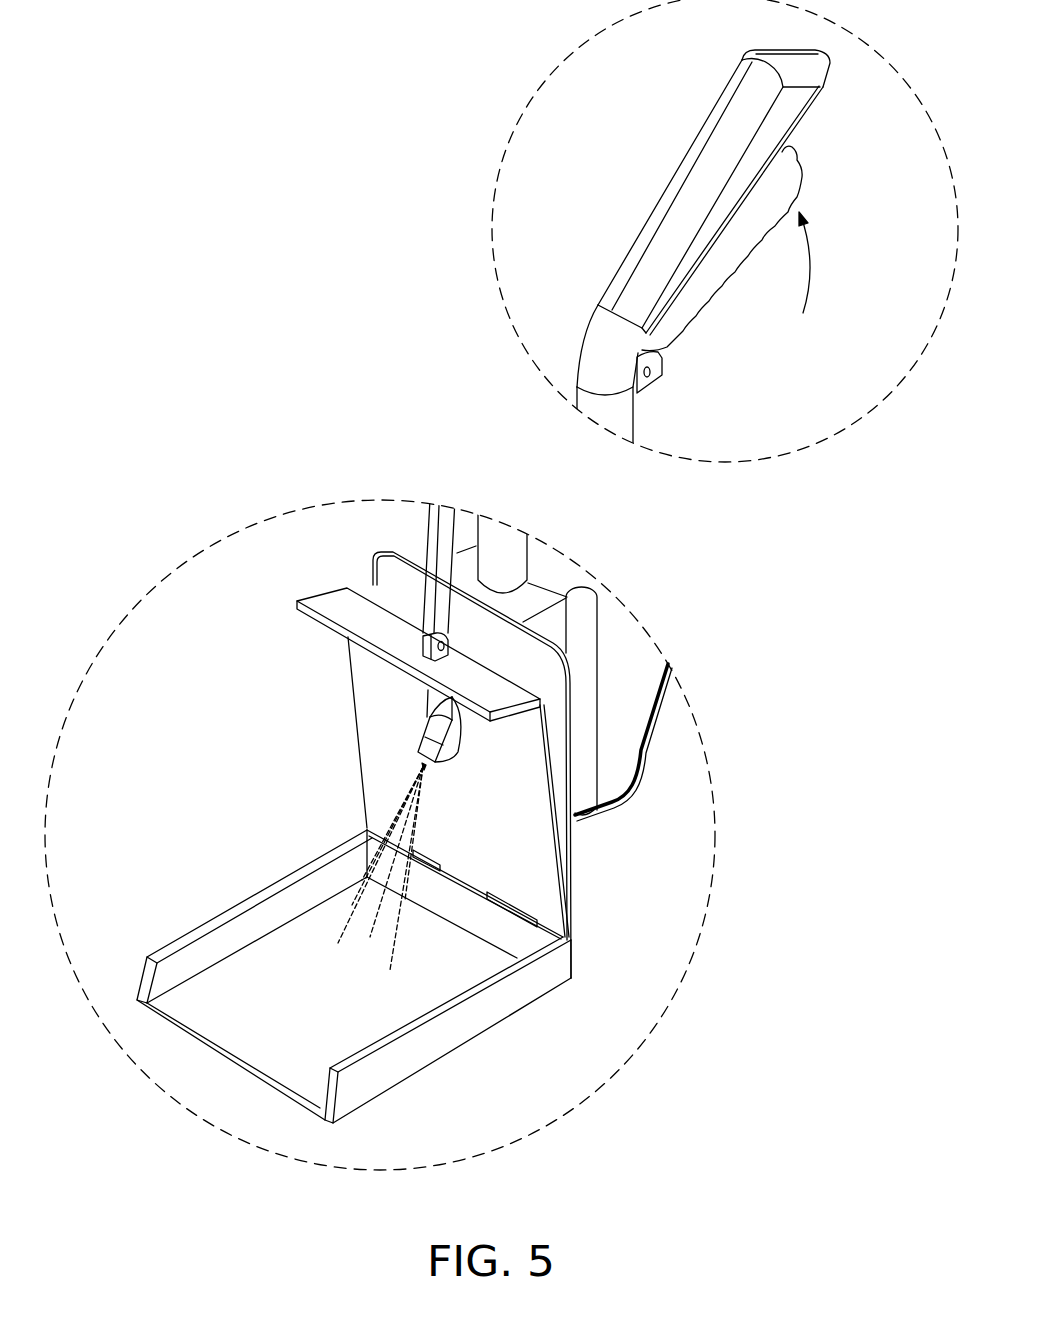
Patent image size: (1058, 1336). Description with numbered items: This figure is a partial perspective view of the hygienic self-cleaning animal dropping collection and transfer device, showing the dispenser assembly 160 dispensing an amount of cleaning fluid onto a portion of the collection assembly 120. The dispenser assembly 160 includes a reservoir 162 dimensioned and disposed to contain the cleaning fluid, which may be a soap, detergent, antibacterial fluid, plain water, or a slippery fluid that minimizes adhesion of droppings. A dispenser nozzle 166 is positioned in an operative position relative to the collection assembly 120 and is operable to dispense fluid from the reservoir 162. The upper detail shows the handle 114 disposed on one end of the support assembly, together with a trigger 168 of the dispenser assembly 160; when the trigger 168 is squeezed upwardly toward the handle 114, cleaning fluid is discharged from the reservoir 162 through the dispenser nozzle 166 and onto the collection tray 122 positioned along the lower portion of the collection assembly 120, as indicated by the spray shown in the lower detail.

The handle 114 is at (690, 147).
The trigger 168 is at (797, 163).
The dispenser nozzle 166 is at (430, 735).
The collection assembly 120 is at (201, 893).
The collection tray 122 is at (353, 988).
The dispenser assembly 160 is at (601, 833).
The reservoir 162 is at (643, 748).